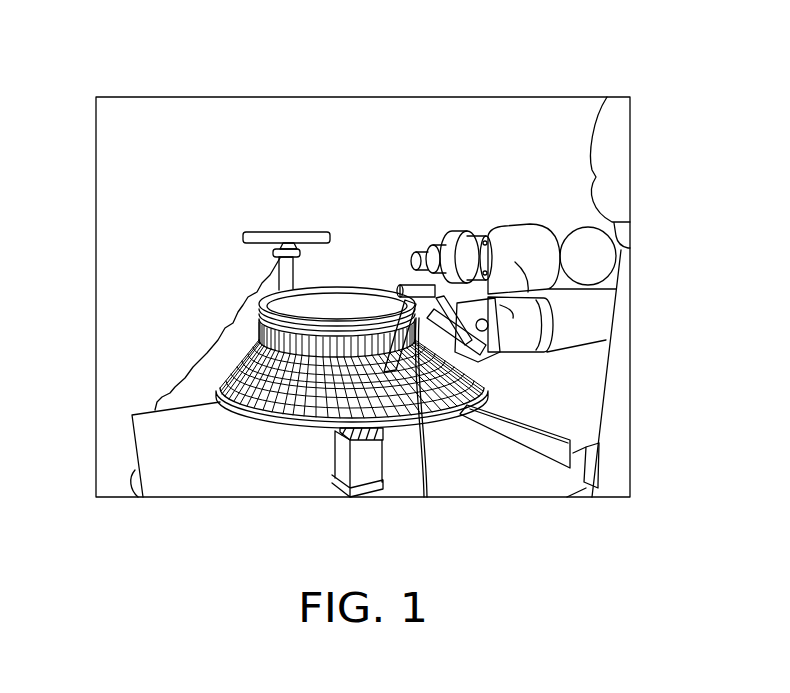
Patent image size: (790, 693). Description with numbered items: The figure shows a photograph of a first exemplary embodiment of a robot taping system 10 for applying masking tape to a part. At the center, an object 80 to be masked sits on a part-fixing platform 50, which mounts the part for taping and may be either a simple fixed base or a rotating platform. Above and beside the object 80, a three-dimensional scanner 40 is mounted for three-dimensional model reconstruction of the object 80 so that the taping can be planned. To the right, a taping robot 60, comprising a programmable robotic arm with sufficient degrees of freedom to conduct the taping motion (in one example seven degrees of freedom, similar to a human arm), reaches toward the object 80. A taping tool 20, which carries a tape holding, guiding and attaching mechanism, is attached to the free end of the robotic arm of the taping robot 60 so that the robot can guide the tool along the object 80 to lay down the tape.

The robot taping system 10 is at (548, 86).
The taping tool 20 is at (480, 360).
The 3D scanner 40 is at (255, 232).
The part-fixing platform 50 is at (282, 427).
The taping robot 60 is at (535, 254).
The object 80 is at (233, 357).